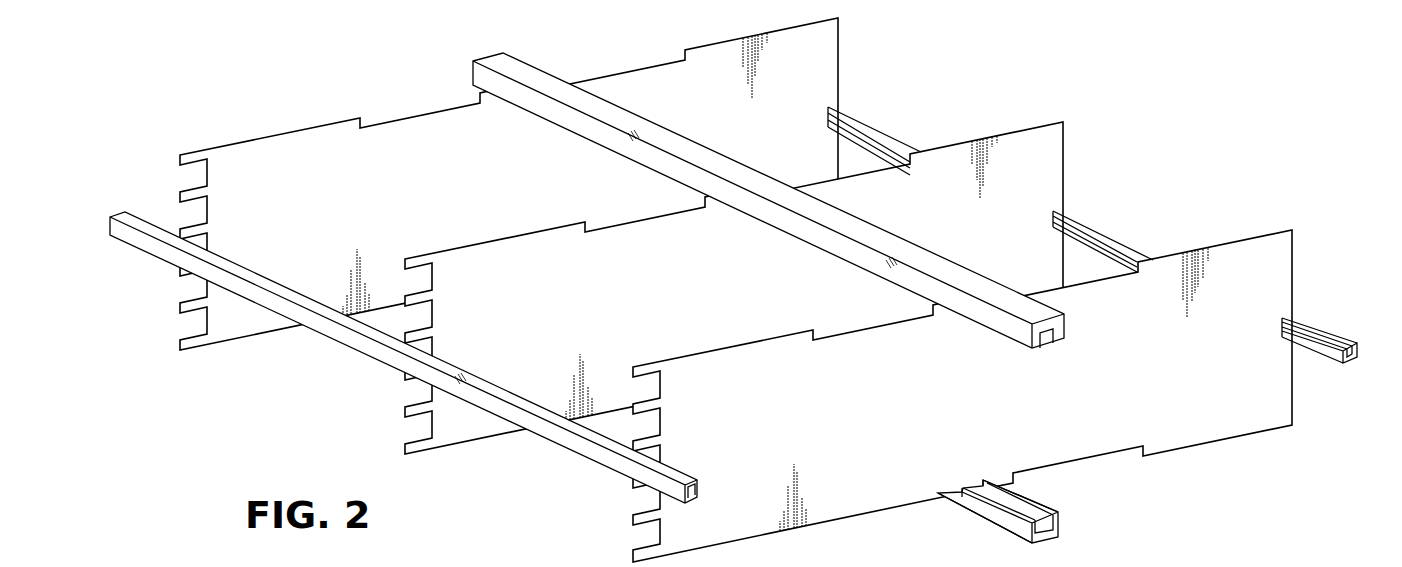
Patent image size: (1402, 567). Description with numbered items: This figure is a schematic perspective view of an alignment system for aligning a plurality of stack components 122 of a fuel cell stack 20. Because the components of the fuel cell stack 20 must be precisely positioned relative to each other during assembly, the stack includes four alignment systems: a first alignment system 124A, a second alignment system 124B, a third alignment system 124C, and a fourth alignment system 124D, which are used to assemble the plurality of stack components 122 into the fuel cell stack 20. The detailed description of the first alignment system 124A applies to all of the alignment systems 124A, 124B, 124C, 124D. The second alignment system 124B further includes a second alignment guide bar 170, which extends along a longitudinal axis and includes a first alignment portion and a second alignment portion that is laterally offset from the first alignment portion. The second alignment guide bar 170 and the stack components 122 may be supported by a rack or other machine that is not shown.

The fuel cell stack 20 is at (733, 292).
The stack components 122 is at (248, 156).
The first alignment system 124A is at (985, 566).
The second alignment system 124B is at (383, 375).
The third alignment system 124C is at (572, 78).
The fourth alignment system 124D is at (1075, 187).
The second alignment guide bar 170 is at (552, 433).